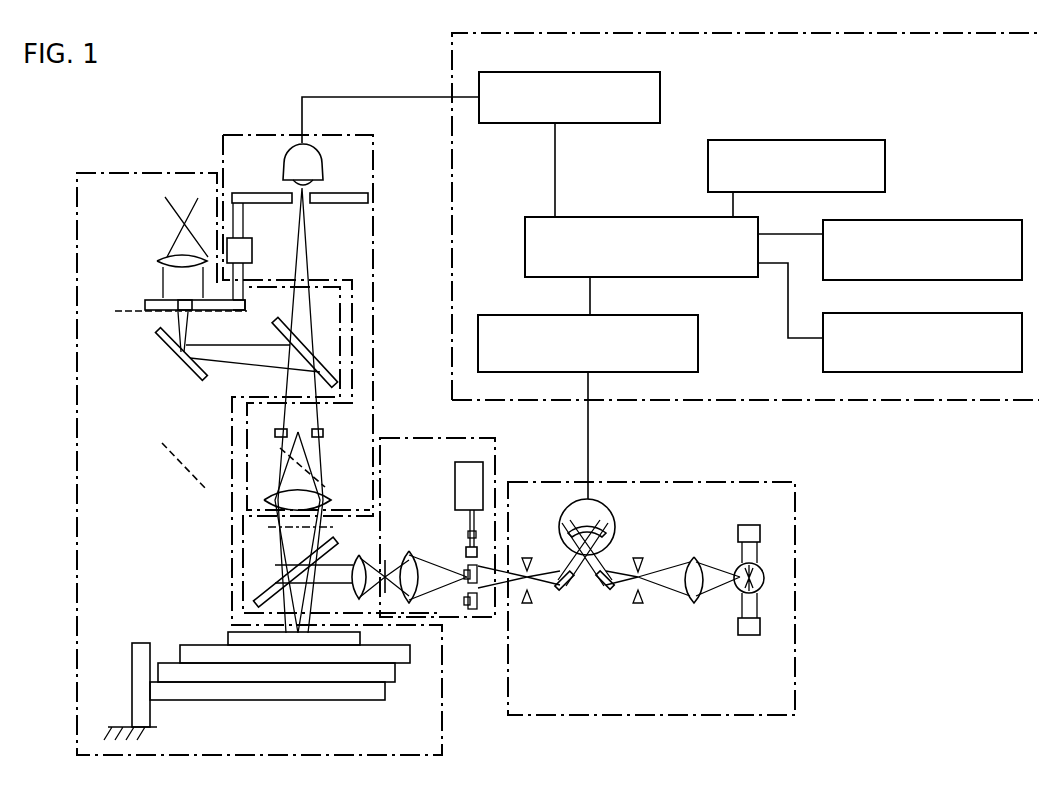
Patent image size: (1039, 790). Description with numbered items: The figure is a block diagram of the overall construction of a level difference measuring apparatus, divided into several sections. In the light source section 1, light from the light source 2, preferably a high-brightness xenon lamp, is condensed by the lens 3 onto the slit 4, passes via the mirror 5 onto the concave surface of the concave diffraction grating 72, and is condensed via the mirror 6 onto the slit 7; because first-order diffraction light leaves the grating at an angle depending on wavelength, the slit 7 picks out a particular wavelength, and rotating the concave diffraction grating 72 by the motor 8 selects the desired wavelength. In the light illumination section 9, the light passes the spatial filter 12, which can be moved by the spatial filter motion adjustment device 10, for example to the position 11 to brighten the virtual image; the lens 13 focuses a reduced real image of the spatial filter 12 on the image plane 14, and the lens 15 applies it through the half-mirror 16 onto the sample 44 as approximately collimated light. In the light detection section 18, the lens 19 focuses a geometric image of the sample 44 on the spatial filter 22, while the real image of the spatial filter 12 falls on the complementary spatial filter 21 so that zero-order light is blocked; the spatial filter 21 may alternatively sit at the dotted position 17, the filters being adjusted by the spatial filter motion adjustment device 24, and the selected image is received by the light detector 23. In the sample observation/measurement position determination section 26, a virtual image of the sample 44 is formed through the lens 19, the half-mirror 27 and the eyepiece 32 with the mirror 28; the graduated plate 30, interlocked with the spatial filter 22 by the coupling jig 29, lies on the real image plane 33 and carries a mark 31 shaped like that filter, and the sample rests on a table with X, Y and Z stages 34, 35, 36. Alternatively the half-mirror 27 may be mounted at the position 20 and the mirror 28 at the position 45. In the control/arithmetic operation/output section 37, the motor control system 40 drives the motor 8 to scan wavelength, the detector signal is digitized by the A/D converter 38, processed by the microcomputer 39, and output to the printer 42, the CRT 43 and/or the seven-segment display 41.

The light source section 1 is at (795, 690).
The light source 2 is at (748, 635).
The lens 3 is at (694, 603).
The slit 4 is at (638, 604).
The mirror 5 is at (605, 590).
The mirror 6 is at (563, 590).
The slit 7 is at (526, 604).
The motor 8 is at (560, 516).
The light illumination section 9 is at (409, 437).
The spatial filter motion adjustment device 10 is at (455, 478).
The position 11 is at (470, 524).
The spatial filter 12 is at (466, 552).
The lens 13 is at (408, 551).
The image plane 14 is at (385, 585).
The lens 15 is at (360, 555).
The half-mirror 16 is at (333, 543).
The position 17 is at (268, 528).
The light detection section 18 is at (374, 327).
The lens 19 is at (328, 500).
The position 20 is at (280, 448).
The spatial filter 21 is at (323, 433).
The spatial filter 22 is at (337, 203).
The light detector 23 is at (324, 158).
The spatial filter motion adjustment device 24 is at (252, 241).
The sample observation/measurement position determination section 26 is at (443, 743).
The half-mirror 27 is at (273, 325).
The mirror 28 is at (182, 360).
The coupling jig 29 is at (243, 295).
The graduated plate 30 is at (140, 312).
The mark 31 is at (187, 302).
The eyepiece 32 is at (157, 260).
The real image plane 33 is at (117, 311).
The X stage 34 is at (193, 645).
The Y stage 35 is at (160, 663).
The Z stage 36 is at (223, 700).
The control/arithmetic operation/output section 37 is at (955, 400).
The A/D converter 38 is at (662, 75).
The microcomputer 39 is at (525, 218).
The motor control system 40 is at (700, 328).
The seven-segment display 41 is at (832, 140).
The printer 42 is at (978, 220).
The CRT 43 is at (823, 368).
The sample 44 is at (360, 638).
The position 45 is at (162, 445).
The concave diffraction grating 72 is at (608, 520).